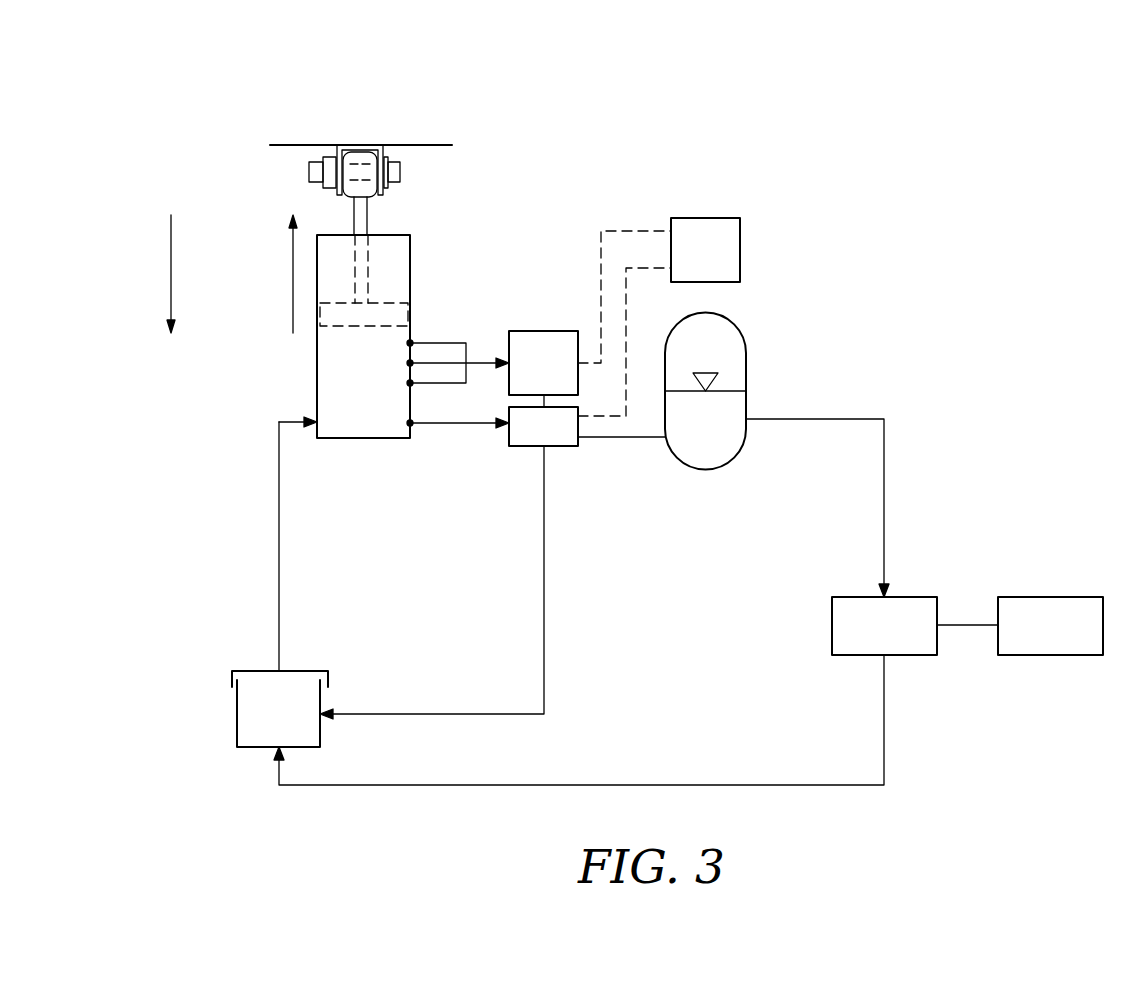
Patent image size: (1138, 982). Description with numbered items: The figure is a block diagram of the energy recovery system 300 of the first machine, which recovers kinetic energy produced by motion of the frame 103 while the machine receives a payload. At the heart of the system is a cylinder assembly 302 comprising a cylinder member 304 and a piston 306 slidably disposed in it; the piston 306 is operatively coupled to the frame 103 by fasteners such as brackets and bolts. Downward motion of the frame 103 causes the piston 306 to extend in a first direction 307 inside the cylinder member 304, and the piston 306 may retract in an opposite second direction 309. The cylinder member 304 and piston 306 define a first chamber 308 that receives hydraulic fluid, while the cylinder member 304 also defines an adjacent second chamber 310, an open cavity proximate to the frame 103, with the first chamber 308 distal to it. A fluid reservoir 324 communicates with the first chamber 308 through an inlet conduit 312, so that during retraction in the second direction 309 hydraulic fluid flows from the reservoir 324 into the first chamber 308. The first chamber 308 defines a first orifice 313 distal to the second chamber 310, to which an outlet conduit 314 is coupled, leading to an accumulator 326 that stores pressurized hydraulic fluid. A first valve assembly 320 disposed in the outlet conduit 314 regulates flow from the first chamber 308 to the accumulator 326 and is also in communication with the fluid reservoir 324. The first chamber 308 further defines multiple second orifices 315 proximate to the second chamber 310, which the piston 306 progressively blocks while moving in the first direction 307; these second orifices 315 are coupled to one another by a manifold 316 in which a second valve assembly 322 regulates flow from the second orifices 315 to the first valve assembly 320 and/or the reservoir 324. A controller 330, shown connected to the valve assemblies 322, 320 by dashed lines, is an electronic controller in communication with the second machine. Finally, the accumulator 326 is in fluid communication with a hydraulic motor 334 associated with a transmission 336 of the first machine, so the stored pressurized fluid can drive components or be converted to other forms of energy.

The energy recovery system 300 is at (160, 108).
The frame 103 is at (290, 140).
The cylinder assembly 302 is at (260, 262).
The piston 306 is at (367, 217).
The first direction 307 is at (171, 276).
The second direction 309 is at (293, 305).
The cylinder member 304 is at (317, 358).
The second chamber 310 is at (391, 278).
The first chamber 308 is at (365, 396).
The second orifices 315 is at (412, 340).
The manifold 316 is at (466, 350).
The first orifice 313 is at (416, 428).
The outlet conduit 314 is at (463, 426).
The inlet conduit 312 is at (287, 425).
The second valve assembly 322 is at (590, 319).
The first valve assembly 320 is at (495, 493).
The controller 330 is at (705, 250).
The accumulator 326 is at (708, 455).
The hydraulic motor 334 is at (636, 691).
The transmission 336 is at (1050, 626).
The fluid reservoir 324 is at (312, 700).